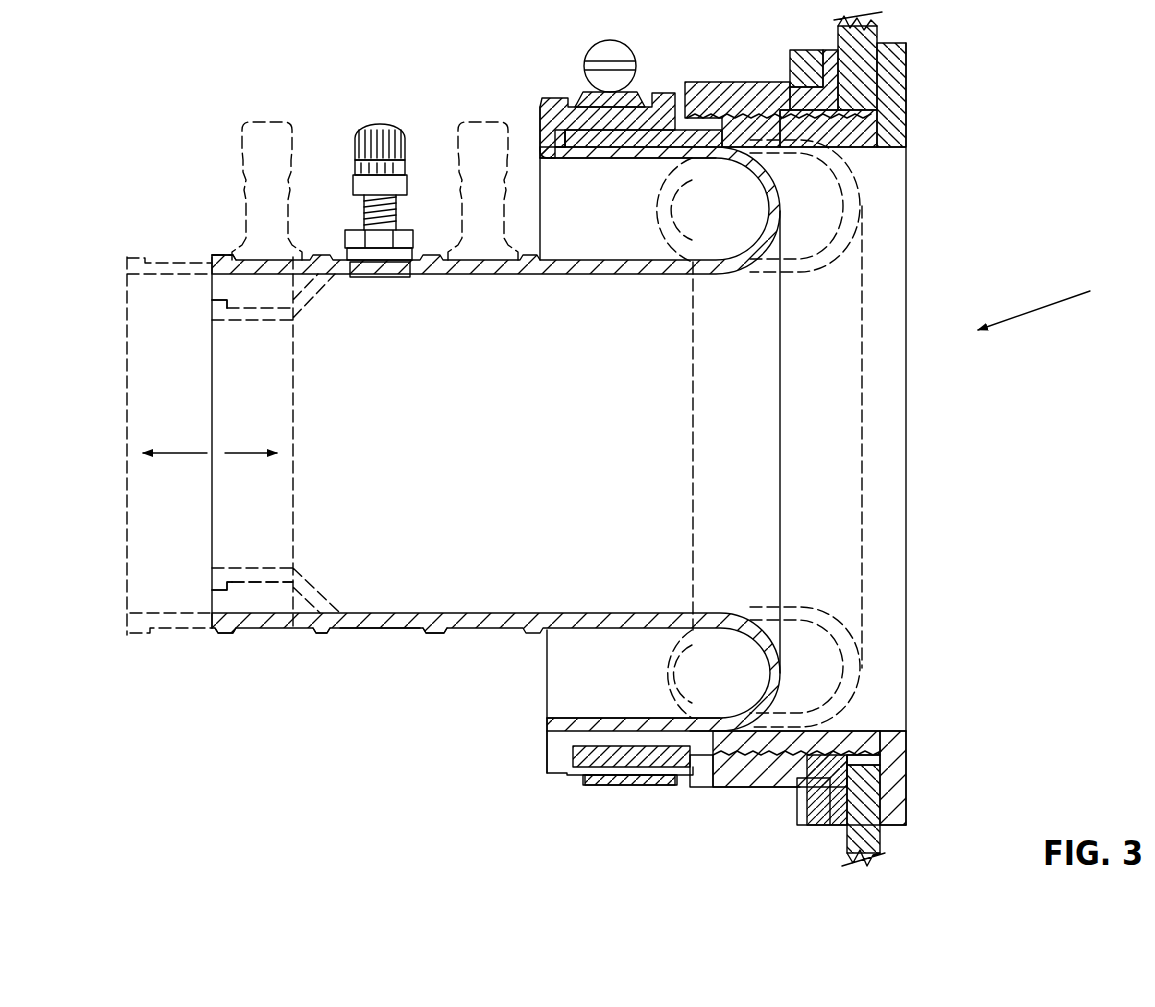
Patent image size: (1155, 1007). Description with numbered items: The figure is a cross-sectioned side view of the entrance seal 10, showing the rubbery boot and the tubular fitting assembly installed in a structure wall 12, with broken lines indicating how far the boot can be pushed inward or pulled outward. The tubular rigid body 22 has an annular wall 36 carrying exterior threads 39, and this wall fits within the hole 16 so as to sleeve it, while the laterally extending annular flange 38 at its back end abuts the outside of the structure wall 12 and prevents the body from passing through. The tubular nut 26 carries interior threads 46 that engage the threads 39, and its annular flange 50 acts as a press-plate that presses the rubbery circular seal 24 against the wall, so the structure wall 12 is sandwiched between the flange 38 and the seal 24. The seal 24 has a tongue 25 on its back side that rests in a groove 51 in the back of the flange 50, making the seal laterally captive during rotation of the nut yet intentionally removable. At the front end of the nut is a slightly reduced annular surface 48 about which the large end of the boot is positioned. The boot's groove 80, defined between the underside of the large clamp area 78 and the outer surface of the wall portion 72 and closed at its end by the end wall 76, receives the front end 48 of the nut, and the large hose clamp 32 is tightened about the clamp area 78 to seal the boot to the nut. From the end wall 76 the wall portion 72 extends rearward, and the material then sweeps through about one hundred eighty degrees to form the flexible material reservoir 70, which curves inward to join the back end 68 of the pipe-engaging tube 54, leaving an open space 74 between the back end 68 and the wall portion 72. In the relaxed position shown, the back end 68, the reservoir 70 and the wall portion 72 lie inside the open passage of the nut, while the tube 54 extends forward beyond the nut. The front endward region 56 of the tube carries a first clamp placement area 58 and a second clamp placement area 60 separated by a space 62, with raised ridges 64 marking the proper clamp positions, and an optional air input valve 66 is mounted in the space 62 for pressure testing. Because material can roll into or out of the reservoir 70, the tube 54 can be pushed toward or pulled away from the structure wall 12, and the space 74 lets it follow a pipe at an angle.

The entrance seal 10 is at (1054, 298).
The structure wall 12 is at (880, 30).
The hole 16 is at (847, 755).
The tubular rigid body 22 is at (906, 50).
The rubbery circular seal 24 is at (877, 93).
The tongue 25 is at (798, 806).
The tubular nut 26 is at (702, 82).
The large hose clamp 32 is at (584, 54).
The annular wall 36 is at (862, 731).
The annular flange 38 is at (906, 92).
The threads 39 is at (842, 147).
The threads 46 is at (913, 176).
The annular surface 48 is at (578, 148).
The annular flange 50 is at (790, 57).
The groove 51 is at (777, 787).
The pipe-engaging tube 54 is at (225, 256).
The front endward region 56 is at (212, 305).
The first clamp placement area 58 is at (247, 584).
The second clamp placement area 60 is at (492, 630).
The space 62 is at (375, 631).
The raised ridges 64 is at (222, 634).
The air input valve 66 is at (372, 126).
The back end 68 is at (752, 270).
The material reservoir 70 is at (866, 206).
The wall portion 72 is at (630, 158).
The open space 74 is at (583, 237).
The end wall 76 is at (546, 107).
The large clamp area 78 is at (582, 779).
The groove 80 is at (556, 133).